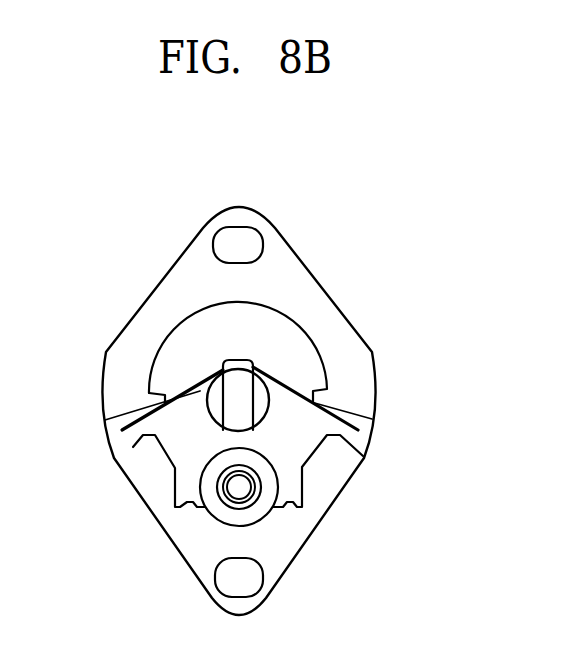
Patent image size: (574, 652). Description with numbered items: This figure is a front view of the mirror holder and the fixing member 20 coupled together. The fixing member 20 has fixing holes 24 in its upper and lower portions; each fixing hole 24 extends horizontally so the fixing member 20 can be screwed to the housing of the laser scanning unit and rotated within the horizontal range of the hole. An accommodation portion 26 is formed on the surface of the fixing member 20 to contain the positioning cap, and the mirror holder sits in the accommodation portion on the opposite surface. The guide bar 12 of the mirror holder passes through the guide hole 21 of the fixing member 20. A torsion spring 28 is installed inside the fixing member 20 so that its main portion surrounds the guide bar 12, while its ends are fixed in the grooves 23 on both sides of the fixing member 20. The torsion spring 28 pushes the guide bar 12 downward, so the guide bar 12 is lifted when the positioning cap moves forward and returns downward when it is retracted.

The guide bar 12 is at (243, 409).
The fixing member 20 is at (305, 295).
The guide hole 21 is at (242, 365).
The groove 23 is at (353, 437).
The fixing hole 24 is at (250, 247).
The accommodation portion 26 is at (190, 357).
The torsion spring 28 is at (136, 436).